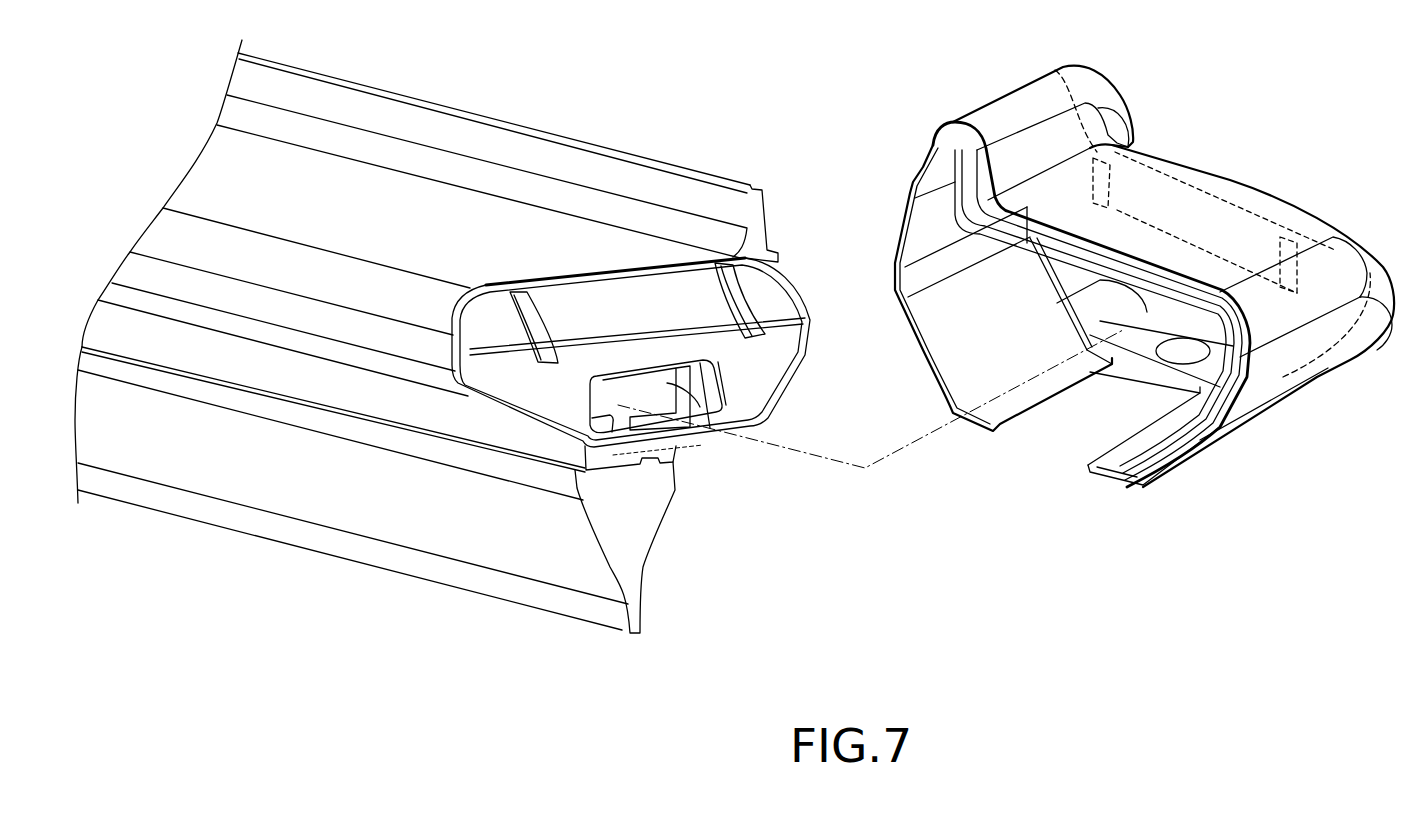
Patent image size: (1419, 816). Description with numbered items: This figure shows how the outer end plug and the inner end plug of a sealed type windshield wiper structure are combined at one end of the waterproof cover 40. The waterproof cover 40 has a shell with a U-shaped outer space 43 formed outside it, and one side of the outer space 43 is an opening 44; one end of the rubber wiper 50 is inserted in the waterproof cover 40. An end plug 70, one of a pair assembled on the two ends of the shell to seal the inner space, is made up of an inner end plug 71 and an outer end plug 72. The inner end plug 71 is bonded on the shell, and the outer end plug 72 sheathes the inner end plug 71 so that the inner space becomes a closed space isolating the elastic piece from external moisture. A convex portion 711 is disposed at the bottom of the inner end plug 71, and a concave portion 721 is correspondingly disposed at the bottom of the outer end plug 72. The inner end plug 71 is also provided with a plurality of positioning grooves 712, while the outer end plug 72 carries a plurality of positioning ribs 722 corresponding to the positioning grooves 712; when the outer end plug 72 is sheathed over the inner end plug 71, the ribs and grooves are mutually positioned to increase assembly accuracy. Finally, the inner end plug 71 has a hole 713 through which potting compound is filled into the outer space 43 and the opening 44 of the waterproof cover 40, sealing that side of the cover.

The waterproof cover 40 is at (402, 215).
The outer space 43 is at (667, 383).
The opening 44 is at (605, 463).
The rubber wiper 50 is at (425, 518).
The end plug 70 is at (862, 47).
The inner end plug 71 is at (780, 287).
The convex portion 711 is at (647, 465).
The positioning grooves 712 is at (748, 305).
The hole 713 is at (713, 412).
The outer end plug 72 is at (1138, 292).
The concave portion 721 is at (1178, 355).
The positioning ribs 722 is at (1130, 190).